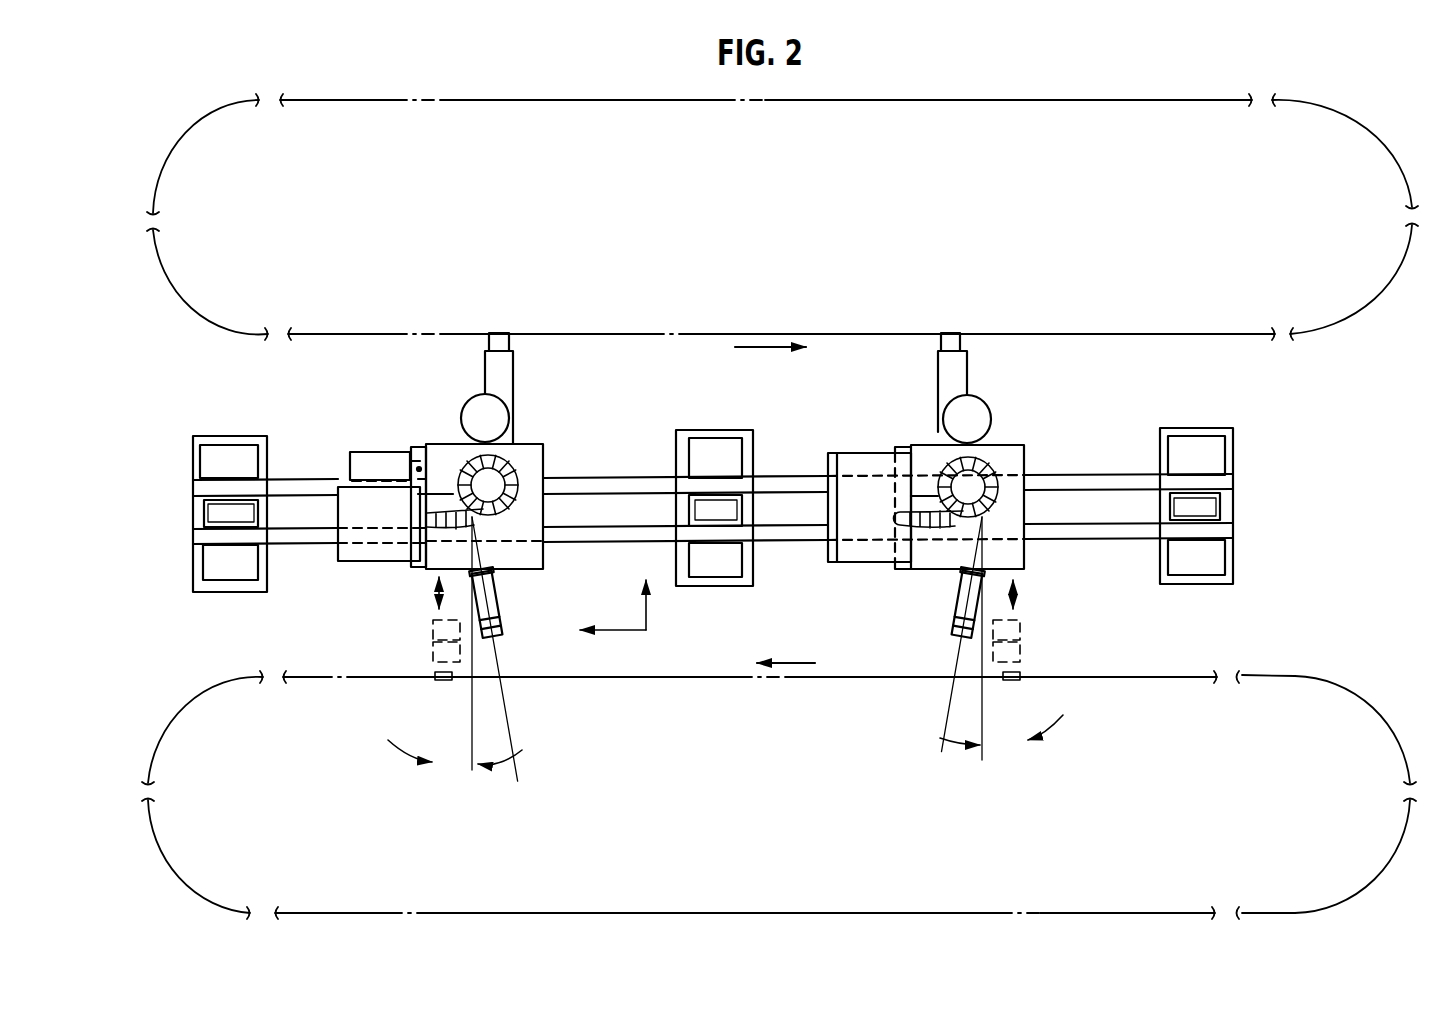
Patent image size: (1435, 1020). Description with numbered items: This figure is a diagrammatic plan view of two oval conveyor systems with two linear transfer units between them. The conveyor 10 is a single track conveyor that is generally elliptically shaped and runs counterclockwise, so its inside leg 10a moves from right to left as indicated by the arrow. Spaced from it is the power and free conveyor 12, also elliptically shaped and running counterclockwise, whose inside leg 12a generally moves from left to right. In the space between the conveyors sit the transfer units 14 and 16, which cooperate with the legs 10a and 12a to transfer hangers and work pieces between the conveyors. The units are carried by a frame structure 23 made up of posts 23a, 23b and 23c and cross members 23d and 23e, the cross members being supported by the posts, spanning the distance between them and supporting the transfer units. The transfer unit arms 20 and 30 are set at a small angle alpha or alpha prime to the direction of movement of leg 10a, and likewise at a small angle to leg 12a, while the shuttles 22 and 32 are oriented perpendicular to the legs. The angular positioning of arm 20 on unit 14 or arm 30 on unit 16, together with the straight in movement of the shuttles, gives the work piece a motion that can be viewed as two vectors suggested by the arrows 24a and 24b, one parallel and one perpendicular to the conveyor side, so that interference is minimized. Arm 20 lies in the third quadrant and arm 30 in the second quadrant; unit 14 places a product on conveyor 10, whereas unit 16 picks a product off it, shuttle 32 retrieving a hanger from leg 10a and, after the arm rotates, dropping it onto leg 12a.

The conveyor 10 is at (1340, 670).
The inside leg 10a is at (368, 686).
The power and free conveyor 12 is at (1152, 86).
The inside leg 12a is at (391, 334).
The transfer unit 14 is at (538, 425).
The transfer unit 16 is at (1013, 427).
The transfer unit arm 20 is at (436, 590).
The shuttle 22 is at (432, 648).
The frame structure 23 is at (1254, 436).
The post 23a is at (1233, 562).
The post 23b is at (718, 430).
The post 23c is at (233, 592).
The cross member 23d is at (1116, 477).
The cross member 23e is at (1110, 541).
The vector arrow 24a is at (647, 605).
The vector arrow 24b is at (617, 631).
The transfer unit arm 30 is at (1018, 590).
The shuttle 32 is at (1022, 648).